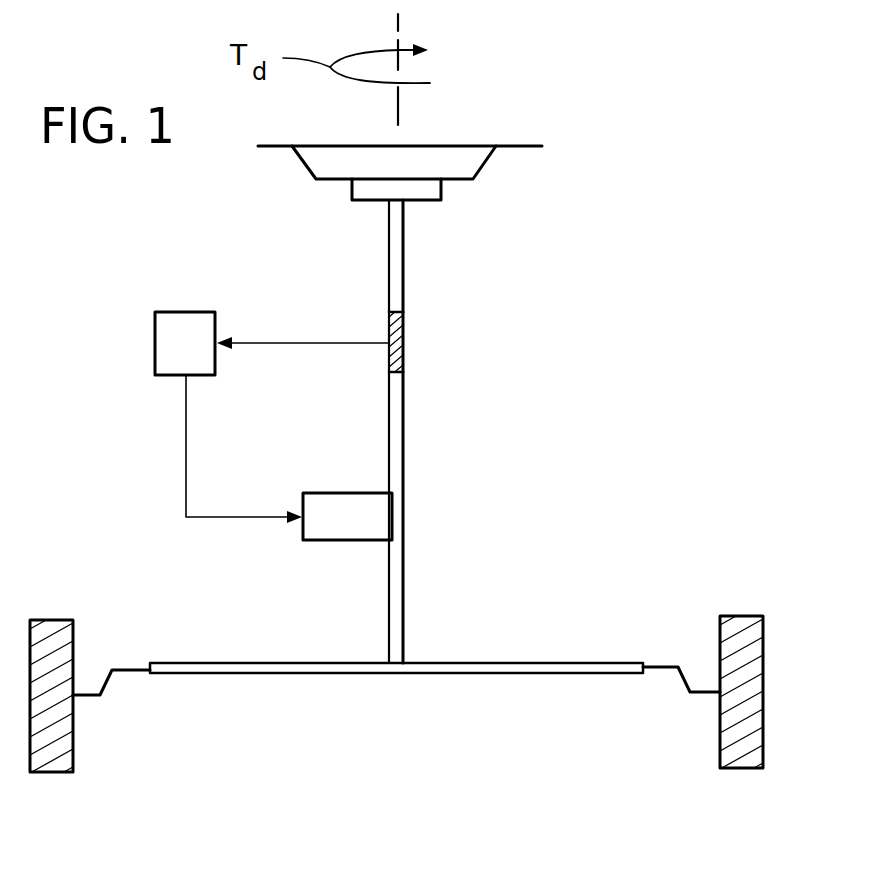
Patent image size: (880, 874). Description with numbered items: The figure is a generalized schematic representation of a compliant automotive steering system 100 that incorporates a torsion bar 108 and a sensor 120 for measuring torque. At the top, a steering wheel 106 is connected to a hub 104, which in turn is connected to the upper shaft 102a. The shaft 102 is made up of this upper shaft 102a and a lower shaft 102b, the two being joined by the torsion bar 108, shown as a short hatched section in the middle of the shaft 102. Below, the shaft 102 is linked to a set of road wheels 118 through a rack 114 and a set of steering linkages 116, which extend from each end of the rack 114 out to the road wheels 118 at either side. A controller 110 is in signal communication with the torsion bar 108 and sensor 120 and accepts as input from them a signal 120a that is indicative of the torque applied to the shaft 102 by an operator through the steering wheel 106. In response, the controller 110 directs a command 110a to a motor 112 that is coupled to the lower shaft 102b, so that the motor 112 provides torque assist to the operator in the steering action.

The automotive steering system 100 is at (386, 735).
The shaft 102 is at (499, 431).
The upper shaft 102a is at (407, 265).
The lower shaft 102b is at (404, 580).
The hub 104 is at (442, 200).
The steering wheel 106 is at (522, 145).
The torsion bar 108 is at (487, 342).
The sensor 120 is at (407, 345).
The signal 120a is at (245, 343).
The controller 110 is at (188, 312).
The command 110a is at (208, 520).
The motor 112 is at (346, 540).
The rack 114 is at (462, 673).
The steering linkages 116 is at (105, 692).
The road wheels 118 is at (48, 772).